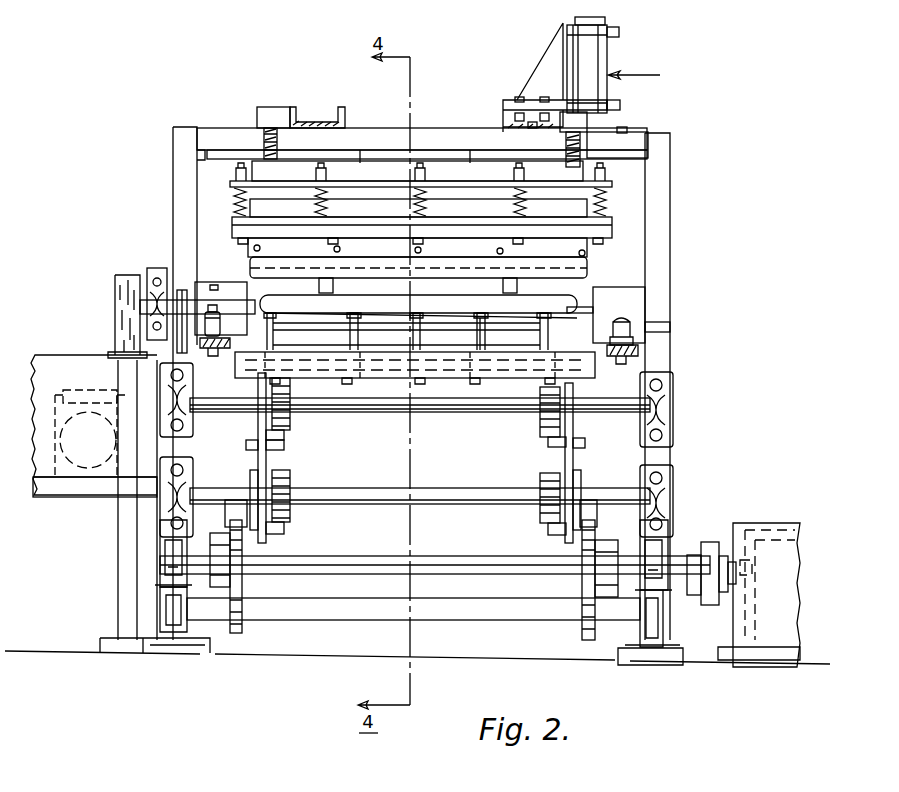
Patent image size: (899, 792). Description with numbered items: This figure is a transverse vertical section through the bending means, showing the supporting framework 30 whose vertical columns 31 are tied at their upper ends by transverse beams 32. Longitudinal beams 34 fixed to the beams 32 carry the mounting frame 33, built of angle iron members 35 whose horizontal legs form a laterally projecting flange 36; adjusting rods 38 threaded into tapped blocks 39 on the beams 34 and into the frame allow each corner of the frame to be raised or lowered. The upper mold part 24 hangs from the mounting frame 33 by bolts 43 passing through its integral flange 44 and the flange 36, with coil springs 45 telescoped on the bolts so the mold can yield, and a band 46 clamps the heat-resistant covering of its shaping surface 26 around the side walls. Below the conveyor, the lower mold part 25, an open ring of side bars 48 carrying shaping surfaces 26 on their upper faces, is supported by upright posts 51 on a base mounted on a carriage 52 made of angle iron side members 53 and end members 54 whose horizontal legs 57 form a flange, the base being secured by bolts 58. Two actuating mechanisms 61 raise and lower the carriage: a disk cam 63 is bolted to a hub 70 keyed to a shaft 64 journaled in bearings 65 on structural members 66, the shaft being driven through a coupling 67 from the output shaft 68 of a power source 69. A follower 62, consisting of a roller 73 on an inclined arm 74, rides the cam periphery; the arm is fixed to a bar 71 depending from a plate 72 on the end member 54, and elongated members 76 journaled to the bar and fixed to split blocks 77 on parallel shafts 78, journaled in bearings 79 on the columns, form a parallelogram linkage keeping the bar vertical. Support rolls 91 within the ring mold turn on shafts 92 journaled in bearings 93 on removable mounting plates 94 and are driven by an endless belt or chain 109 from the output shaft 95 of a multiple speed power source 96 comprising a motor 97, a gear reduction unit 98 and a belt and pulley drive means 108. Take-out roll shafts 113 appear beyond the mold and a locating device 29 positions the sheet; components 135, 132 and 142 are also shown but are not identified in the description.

The upper mold part 24 is at (250, 269).
The lower mold part 25 is at (406, 332).
The shaping surfaces 26 is at (490, 300).
The locating device 29 is at (335, 286).
The supporting framework 30 is at (172, 132).
The columns 31 is at (180, 192).
The beams 32 is at (374, 140).
The mounting frame 33 is at (440, 163).
The beams 34 is at (343, 120).
The angle iron members 35 is at (455, 170).
The flange 36 is at (232, 185).
The rods 38 is at (268, 147).
The tapped blocks 39 is at (272, 116).
The bolts 43 is at (238, 172).
The flange 44 is at (248, 228).
The coil springs 45 is at (234, 207).
The band 46 is at (252, 250).
The side bars 48 is at (406, 323).
The upright posts 51 is at (350, 329).
The carriage 52 is at (333, 378).
The angle iron side members 53 is at (383, 378).
The end members 54 is at (258, 410).
The leg 57 is at (250, 378).
The bolts 58 is at (475, 380).
The actuating mechanisms 61 is at (300, 470).
The follower 62 is at (236, 489).
The disk cam 63 is at (238, 590).
The shaft 64 is at (346, 560).
The bearings 65 is at (170, 556).
The structural members 66 is at (180, 602).
The coupling 67 is at (707, 600).
The output shaft 68 is at (728, 566).
The power source 69 is at (762, 545).
The hub 70 is at (620, 548).
The bar 71 is at (268, 437).
The plate 72 is at (259, 425).
The roller 73 is at (225, 516).
The arm 74 is at (256, 488).
The elongated members 76 is at (284, 452).
The split blocks 77 is at (288, 392).
The parallel shafts 78 is at (430, 410).
The bearings 79 is at (172, 482).
The rolls 91 is at (480, 320).
The shafts 92 is at (245, 316).
The bearings 93 is at (212, 316).
The mounting plates 94 is at (676, 349).
The output shaft 95 is at (148, 300).
The power source 96 is at (67, 357).
The motor 97 is at (52, 438).
The gear reduction unit 98 is at (55, 395).
The belt and pulley drive means 108 is at (113, 300).
The endless belt or chain 109 is at (180, 300).
The shafts 113 is at (585, 302).
The actuating direction 132 is at (657, 73).
The air cylinder 135 is at (592, 64).
The cylinder port fitting 142 is at (622, 104).